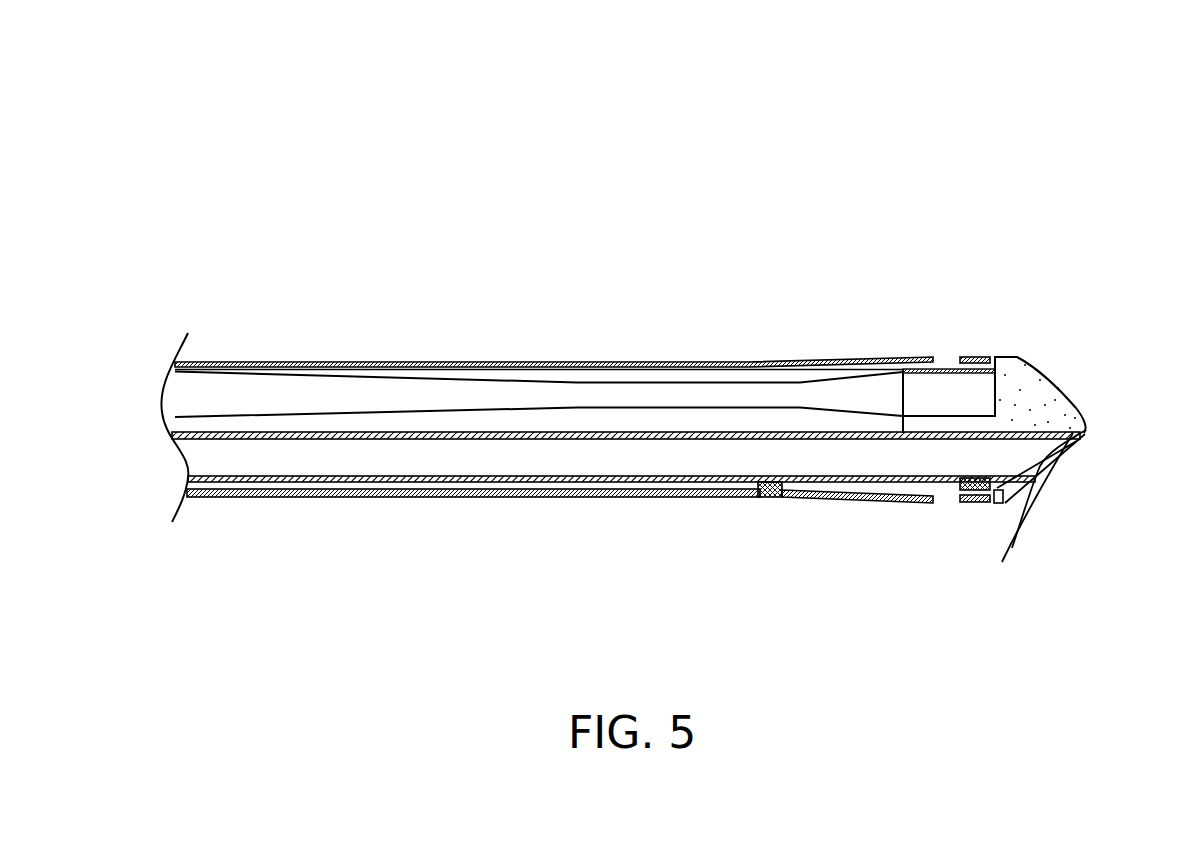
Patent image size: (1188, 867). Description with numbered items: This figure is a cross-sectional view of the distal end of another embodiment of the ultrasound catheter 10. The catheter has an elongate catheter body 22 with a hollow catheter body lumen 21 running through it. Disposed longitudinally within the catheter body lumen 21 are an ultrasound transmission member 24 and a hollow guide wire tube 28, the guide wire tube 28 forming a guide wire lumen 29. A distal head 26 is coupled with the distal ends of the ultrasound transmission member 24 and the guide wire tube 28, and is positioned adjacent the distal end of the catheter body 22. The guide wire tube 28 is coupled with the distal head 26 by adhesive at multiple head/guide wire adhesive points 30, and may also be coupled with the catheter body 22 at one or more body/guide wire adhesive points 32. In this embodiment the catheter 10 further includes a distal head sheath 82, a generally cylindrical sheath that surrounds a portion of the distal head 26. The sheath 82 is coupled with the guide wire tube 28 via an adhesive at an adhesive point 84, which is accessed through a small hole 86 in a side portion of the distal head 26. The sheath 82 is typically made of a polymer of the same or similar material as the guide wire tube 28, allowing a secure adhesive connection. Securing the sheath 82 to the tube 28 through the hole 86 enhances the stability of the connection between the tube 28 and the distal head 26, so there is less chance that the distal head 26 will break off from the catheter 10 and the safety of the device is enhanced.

The ultrasound catheter 10 is at (483, 113).
The catheter body lumen 21 is at (574, 418).
The catheter body 22 is at (634, 357).
The ultrasound transmission member 24 is at (319, 391).
The distal head 26 is at (1009, 356).
The guide wire tube 28 is at (436, 480).
The guide wire lumen 29 is at (559, 456).
The head/guide wire adhesive points 30 is at (903, 433).
The body/guide wire adhesive points 32 is at (767, 494).
The distal head sheath 82 is at (966, 355).
The adhesive point 84 is at (993, 484).
The hole 86 is at (962, 488).